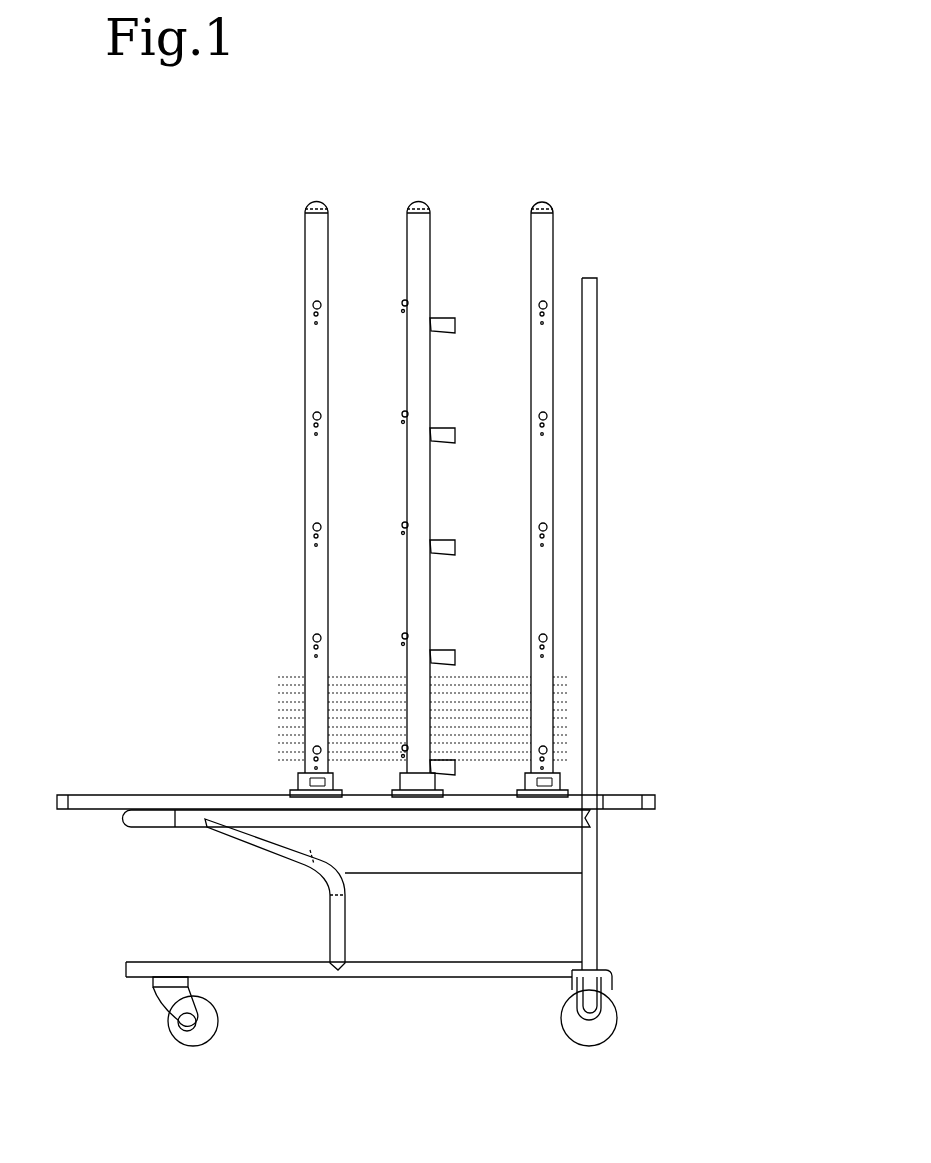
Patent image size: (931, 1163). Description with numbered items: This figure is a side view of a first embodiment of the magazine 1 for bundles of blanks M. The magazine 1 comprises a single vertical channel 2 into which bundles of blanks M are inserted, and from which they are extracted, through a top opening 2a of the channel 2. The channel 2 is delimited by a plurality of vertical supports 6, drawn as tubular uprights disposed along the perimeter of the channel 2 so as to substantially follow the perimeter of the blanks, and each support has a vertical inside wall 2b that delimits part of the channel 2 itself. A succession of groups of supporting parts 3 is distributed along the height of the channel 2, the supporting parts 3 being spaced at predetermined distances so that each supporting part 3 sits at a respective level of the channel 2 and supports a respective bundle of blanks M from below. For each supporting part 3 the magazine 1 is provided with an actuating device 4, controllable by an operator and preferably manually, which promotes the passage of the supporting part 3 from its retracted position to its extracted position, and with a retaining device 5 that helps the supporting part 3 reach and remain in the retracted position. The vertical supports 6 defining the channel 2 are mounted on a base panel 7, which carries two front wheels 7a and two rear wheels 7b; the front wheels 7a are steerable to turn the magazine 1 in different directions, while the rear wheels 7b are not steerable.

The magazine 1 is at (170, 279).
The vertical channel 2 is at (357, 262).
The top opening 2a is at (453, 193).
The vertical inside wall 2b is at (433, 586).
The supporting part 3 is at (456, 333).
The actuating device 4 is at (314, 418).
The retaining device 5 is at (314, 433).
The vertical support 6 is at (305, 242).
The base panel 7 is at (90, 793).
The front wheel 7a is at (218, 1022).
The rear wheel 7b is at (562, 1026).
The bundle of blanks M is at (280, 685).